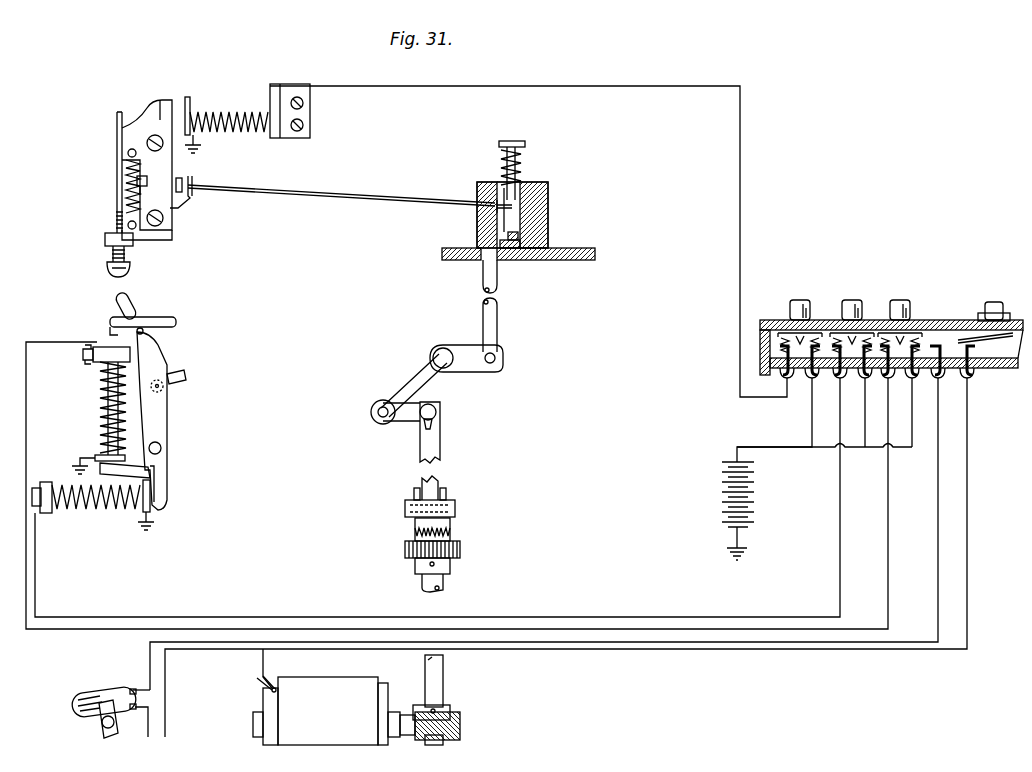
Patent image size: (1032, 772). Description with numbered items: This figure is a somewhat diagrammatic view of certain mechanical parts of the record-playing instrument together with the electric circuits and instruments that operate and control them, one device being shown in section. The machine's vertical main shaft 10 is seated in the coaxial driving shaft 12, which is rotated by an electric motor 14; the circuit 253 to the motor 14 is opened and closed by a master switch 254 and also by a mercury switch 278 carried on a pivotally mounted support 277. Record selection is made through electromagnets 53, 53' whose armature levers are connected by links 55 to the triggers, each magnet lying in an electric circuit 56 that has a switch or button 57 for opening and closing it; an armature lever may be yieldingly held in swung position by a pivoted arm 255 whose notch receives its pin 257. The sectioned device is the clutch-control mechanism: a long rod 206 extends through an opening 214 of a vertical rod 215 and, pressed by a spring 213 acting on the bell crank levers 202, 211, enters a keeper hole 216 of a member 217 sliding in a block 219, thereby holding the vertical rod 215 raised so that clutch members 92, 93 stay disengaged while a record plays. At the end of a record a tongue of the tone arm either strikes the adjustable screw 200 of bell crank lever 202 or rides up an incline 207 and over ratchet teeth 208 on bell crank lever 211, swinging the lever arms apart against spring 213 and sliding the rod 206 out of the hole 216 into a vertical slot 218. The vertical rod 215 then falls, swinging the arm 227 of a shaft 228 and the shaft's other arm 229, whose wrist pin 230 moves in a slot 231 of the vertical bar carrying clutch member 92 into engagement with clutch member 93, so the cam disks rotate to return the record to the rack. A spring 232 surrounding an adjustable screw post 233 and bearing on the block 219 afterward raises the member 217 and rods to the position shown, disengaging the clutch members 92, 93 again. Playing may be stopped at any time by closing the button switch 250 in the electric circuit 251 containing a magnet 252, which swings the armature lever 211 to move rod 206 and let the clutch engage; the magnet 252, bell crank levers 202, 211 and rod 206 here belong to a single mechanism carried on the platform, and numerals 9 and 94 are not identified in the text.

The rod 9 is at (427, 484).
The main shaft 10 is at (444, 582).
The driving shaft 12 is at (443, 683).
The electric motor 14 is at (334, 710).
The electromagnet 53 is at (93, 516).
The electromagnet 53' is at (107, 411).
The link 55 is at (180, 382).
The electric circuit 56 is at (27, 432).
The switch or button 57 is at (856, 296).
The clutch member 92 is at (455, 520).
The clutch member 93 is at (415, 532).
The gear 94 is at (405, 550).
The screw 200 is at (123, 268).
The bell crank lever 202 is at (165, 208).
The long rod 206 is at (388, 197).
The incline 207 is at (117, 118).
The ratchet teeth 208 is at (118, 186).
The bell crank lever 211 is at (160, 156).
The spring 213 is at (127, 170).
The opening 214 is at (495, 206).
The vertical rod 215 is at (482, 312).
The keeper hole 216 is at (546, 216).
The member 217 is at (527, 182).
The vertical slot 218 is at (477, 230).
The block 219 is at (546, 197).
The arm 227 is at (473, 369).
The shaft 228 is at (425, 383).
The arm 229 is at (403, 420).
The wrist pin 230 is at (436, 412).
The slot 231 is at (432, 425).
The spring 232 is at (500, 155).
The adjustable screw post 233 is at (514, 142).
The button switch 250 is at (803, 296).
The electric circuit 251 is at (526, 86).
The magnet 252 is at (220, 100).
The circuit 253 is at (738, 651).
The master switch 254 is at (993, 302).
The pivoted arm 255 is at (150, 317).
The pin 257 is at (160, 340).
The pivotally mounted support 277 is at (97, 735).
The mercury switch 278 is at (72, 708).